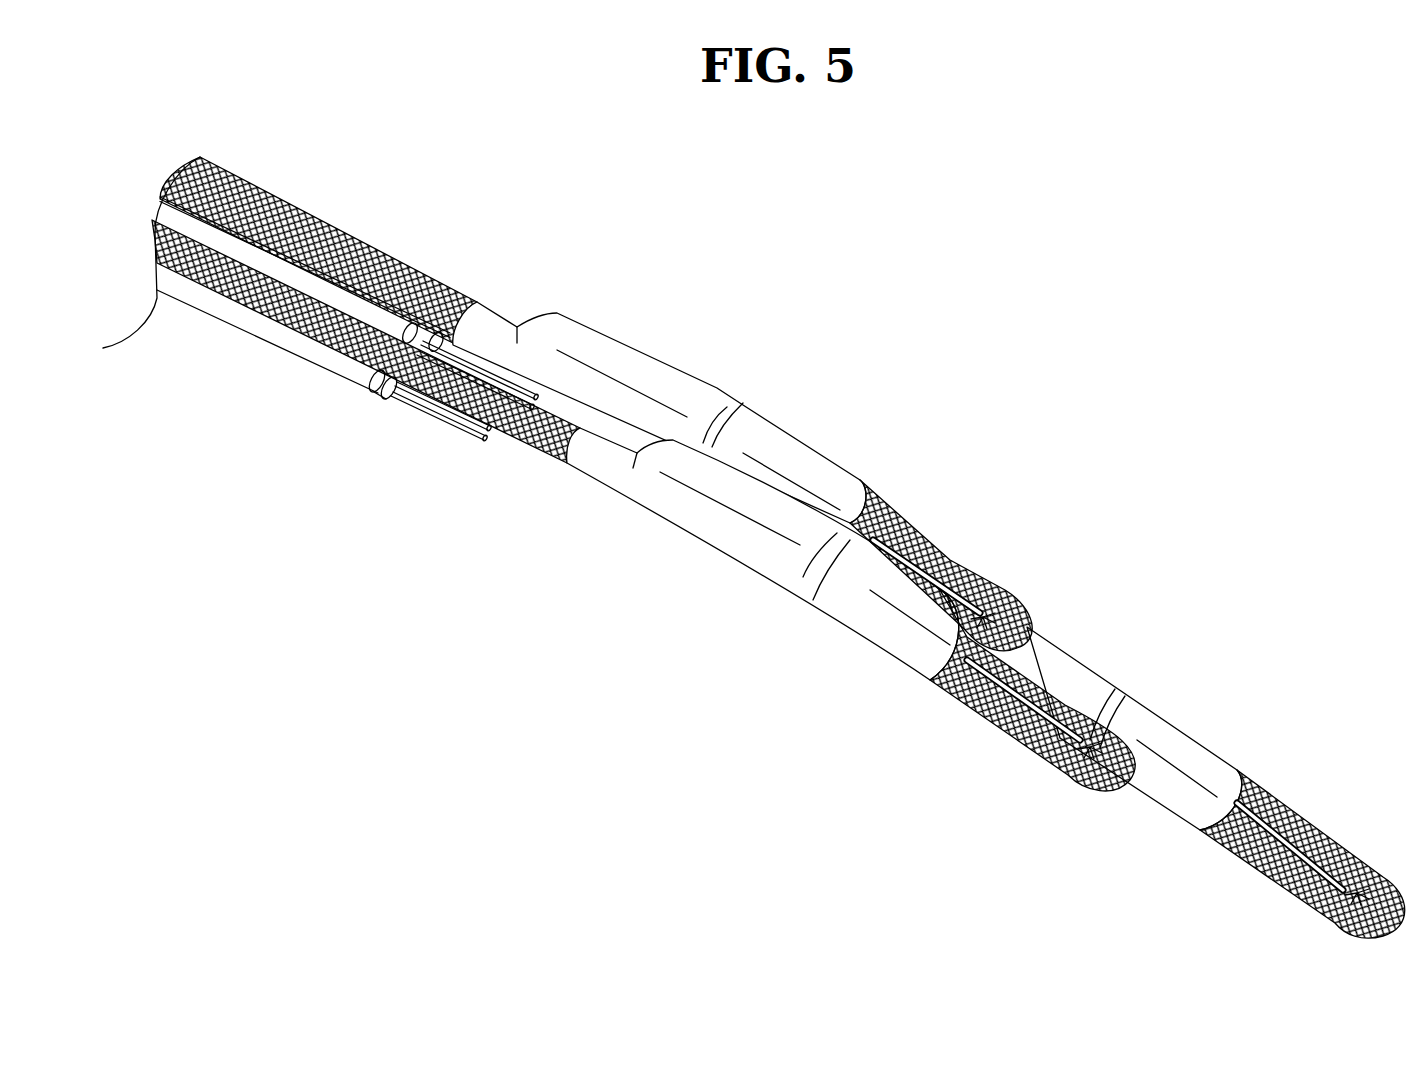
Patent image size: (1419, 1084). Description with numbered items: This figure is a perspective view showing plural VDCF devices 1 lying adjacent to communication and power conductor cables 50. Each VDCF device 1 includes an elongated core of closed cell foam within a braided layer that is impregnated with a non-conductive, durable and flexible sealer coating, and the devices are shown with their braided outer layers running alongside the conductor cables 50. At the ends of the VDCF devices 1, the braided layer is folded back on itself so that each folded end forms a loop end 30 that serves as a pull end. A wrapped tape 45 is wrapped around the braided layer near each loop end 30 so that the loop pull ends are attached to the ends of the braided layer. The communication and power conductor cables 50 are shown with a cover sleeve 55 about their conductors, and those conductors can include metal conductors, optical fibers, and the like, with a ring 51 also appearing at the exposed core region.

The VDCF device 1 is at (313, 222).
The loop end 30 is at (985, 563).
The wrapped tape 45 is at (792, 458).
The communication and power conductor cables 50 is at (313, 285).
The clamp ring 51 is at (417, 410).
The cover sleeve 55 is at (377, 393).